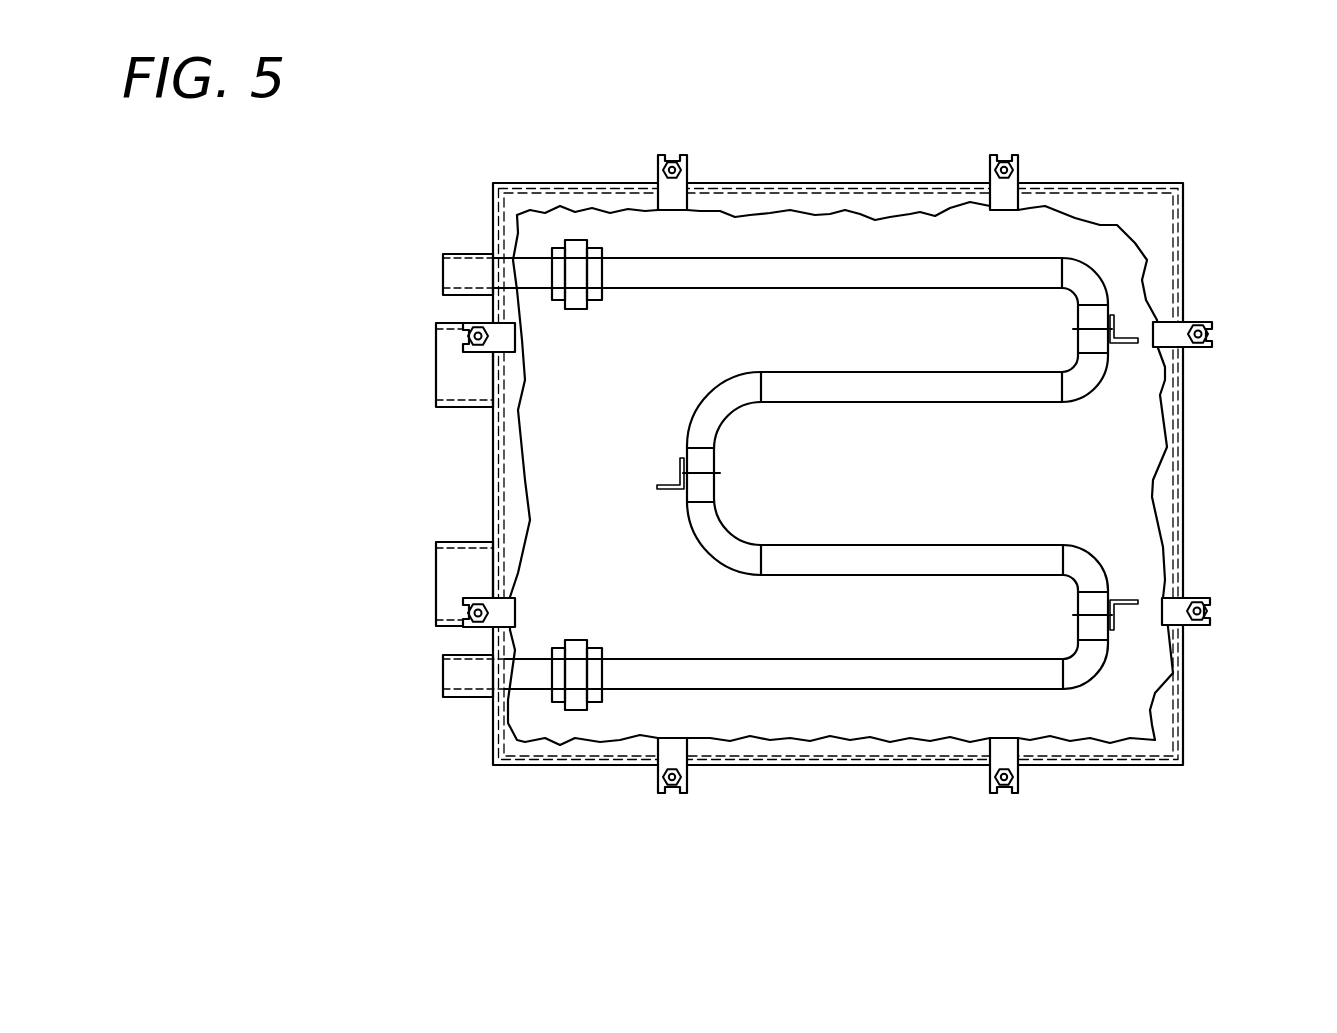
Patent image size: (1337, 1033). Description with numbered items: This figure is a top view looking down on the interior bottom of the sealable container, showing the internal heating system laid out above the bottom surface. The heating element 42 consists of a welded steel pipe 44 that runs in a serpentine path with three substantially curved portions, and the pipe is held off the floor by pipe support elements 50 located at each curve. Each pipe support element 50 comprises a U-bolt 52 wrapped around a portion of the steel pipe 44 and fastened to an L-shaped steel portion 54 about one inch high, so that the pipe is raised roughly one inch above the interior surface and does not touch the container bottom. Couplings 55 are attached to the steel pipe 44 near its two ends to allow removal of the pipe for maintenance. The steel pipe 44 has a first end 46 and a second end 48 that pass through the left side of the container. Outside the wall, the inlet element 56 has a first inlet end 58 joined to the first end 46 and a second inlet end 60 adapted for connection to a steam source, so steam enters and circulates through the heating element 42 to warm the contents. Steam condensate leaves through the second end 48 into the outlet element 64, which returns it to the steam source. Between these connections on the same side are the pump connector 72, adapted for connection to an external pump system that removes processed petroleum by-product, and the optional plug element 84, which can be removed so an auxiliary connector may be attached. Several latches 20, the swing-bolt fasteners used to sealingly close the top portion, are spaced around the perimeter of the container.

The latches 20 is at (685, 160).
The heating element 42 is at (953, 273).
The steel pipe 44 is at (1024, 268).
The first end 46 is at (515, 262).
The second end 48 is at (508, 700).
The pipe support elements 50 is at (1100, 308).
The U-bolt 52 is at (1073, 329).
The L-shaped steel portion 54 is at (665, 485).
The couplings 55 is at (576, 309).
The inlet element 56 is at (460, 265).
The first inlet end 58 is at (493, 253).
The second inlet end 60 is at (443, 267).
The outlet element 64 is at (467, 688).
The pump connector 72 is at (450, 580).
The plug element 84 is at (455, 380).